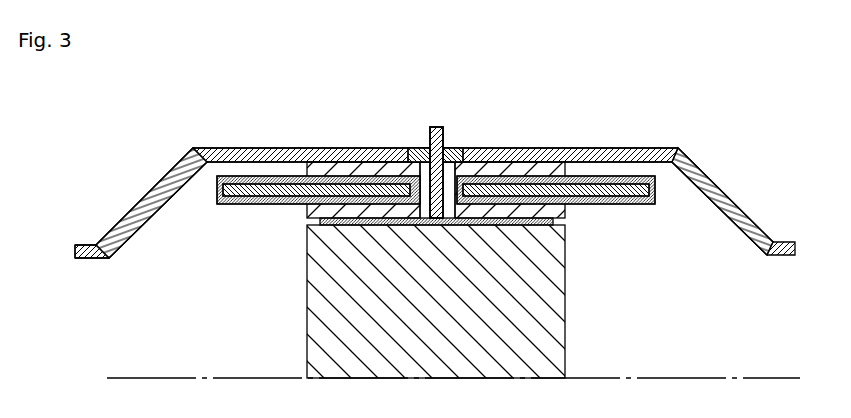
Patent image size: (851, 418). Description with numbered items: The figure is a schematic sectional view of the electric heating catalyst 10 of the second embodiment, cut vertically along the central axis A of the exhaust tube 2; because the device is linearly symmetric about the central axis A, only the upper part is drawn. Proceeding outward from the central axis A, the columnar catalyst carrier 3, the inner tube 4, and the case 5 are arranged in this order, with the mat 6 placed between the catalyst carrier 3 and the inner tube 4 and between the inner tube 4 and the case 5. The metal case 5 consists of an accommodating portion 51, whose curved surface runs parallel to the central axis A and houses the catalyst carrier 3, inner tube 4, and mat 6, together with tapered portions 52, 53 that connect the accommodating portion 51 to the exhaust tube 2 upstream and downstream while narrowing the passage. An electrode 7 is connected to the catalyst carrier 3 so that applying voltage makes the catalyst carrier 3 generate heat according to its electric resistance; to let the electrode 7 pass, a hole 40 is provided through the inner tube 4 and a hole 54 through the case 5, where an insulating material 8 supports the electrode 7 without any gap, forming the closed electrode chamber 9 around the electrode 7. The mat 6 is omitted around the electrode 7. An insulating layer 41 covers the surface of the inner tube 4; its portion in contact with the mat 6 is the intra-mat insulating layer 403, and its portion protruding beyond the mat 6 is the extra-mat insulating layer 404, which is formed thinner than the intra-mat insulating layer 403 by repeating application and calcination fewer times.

The electric heating catalyst 10 is at (653, 85).
The exhaust tube 2 is at (82, 245).
The catalyst carrier 3 is at (567, 272).
The inner tube 4 is at (290, 193).
The hole 40 is at (458, 174).
The insulating layer 41 is at (215, 200).
The intra-mat insulating layer 403 is at (310, 222).
The extra-mat insulating layer 404 is at (248, 204).
The case 5 is at (513, 148).
The accommodating portion 51 is at (605, 148).
The tapered portion 52 is at (143, 195).
The tapered portion 53 is at (723, 190).
The hole 54 is at (423, 148).
The mat 6 is at (548, 168).
The electrode 7 is at (437, 127).
The insulating material 8 is at (457, 148).
The electrode chamber 9 is at (408, 148).
The central axis A is at (712, 378).